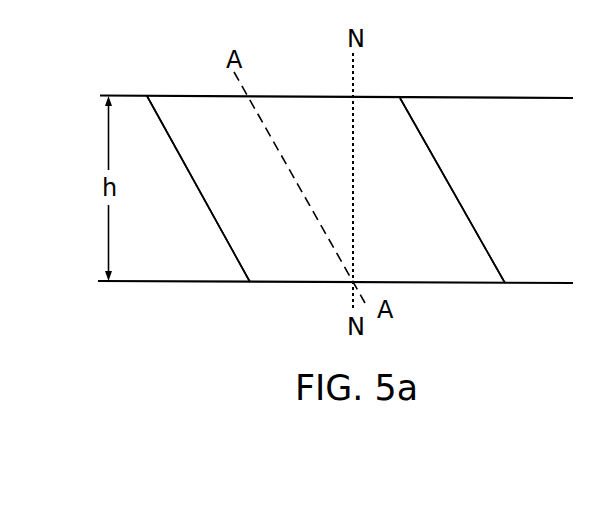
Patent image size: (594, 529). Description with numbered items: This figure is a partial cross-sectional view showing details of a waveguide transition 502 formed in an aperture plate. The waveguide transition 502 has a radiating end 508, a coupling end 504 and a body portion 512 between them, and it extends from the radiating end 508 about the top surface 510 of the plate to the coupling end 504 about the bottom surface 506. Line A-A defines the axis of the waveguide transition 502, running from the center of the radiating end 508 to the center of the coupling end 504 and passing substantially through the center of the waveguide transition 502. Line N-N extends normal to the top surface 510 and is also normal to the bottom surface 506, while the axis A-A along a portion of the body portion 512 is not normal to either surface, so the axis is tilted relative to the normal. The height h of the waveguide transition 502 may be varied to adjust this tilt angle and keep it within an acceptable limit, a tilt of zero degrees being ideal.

The waveguide transition 502 is at (422, 145).
The coupling end 504 is at (185, 93).
The bottom surface 506 is at (120, 93).
The radiating end 508 is at (289, 283).
The top surface 510 is at (155, 283).
The body portion 512 is at (455, 193).